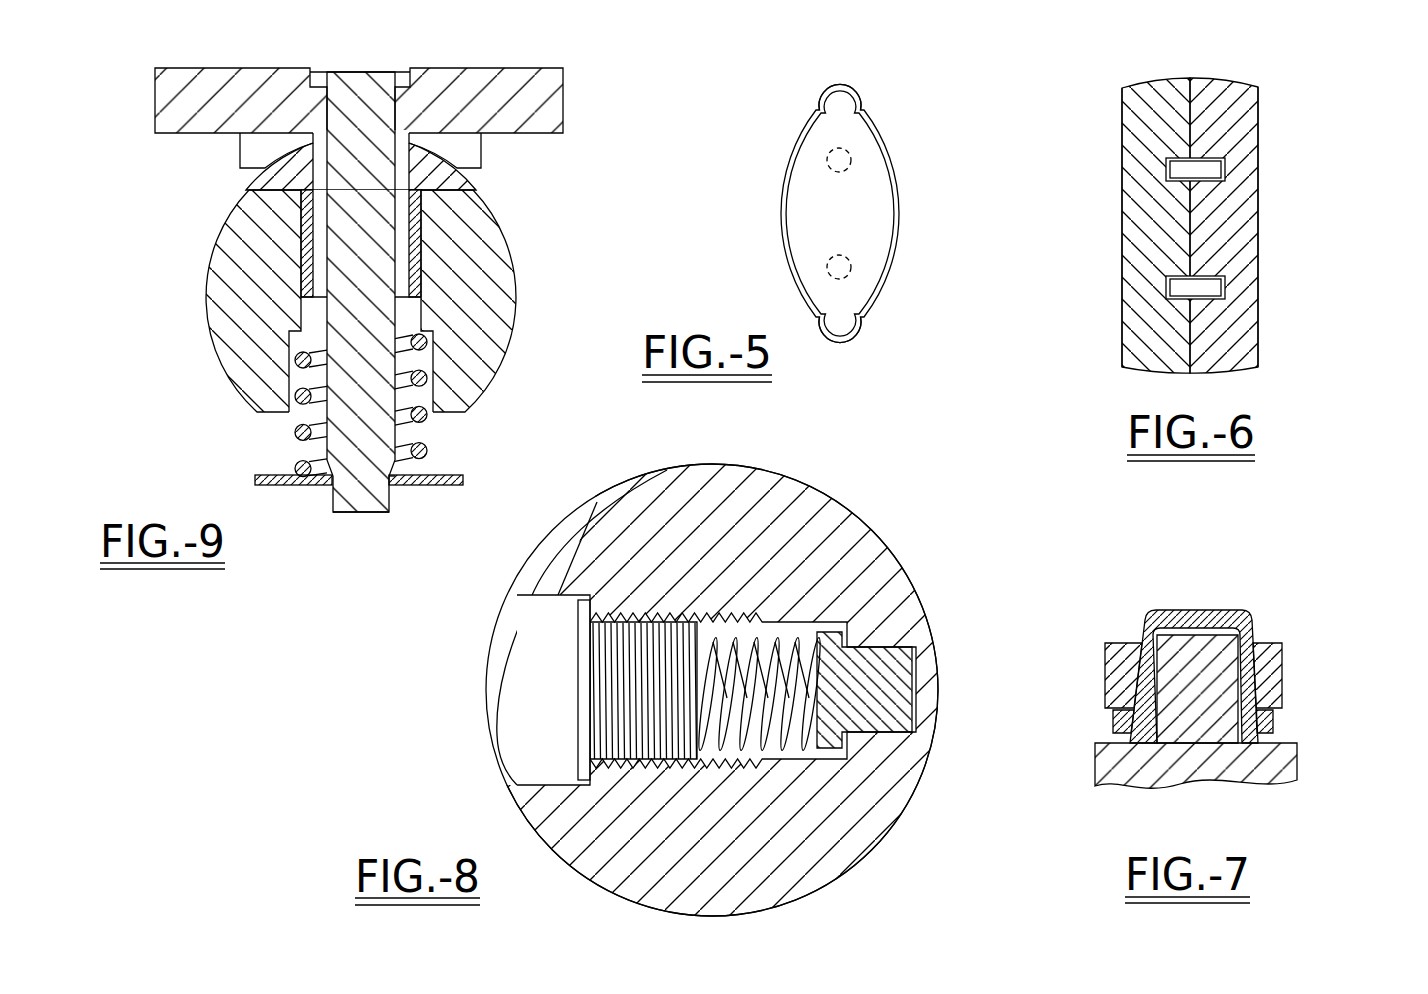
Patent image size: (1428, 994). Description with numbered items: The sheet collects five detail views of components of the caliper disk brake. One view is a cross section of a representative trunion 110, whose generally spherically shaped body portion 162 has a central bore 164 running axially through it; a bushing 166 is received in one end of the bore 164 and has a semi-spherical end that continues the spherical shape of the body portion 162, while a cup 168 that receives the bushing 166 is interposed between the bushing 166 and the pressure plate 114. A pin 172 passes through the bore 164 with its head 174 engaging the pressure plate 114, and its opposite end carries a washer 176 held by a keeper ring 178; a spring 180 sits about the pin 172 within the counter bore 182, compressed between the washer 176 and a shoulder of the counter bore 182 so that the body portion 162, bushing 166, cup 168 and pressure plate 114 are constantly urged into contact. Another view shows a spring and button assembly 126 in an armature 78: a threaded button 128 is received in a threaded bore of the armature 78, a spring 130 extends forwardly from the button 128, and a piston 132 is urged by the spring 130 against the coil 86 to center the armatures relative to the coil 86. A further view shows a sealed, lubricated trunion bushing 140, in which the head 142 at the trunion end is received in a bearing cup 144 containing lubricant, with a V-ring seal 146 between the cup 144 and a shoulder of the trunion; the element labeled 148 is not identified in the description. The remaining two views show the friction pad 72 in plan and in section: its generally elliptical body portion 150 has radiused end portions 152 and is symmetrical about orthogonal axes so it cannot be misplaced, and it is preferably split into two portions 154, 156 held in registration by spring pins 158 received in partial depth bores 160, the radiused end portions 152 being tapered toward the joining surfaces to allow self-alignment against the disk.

In FIG. 9, the trunion 110 is at (342, 281).
In FIG. 9, the pressure plate 114 is at (155, 106).
In FIG. 9, the body portion 162 is at (406, 303).
In FIG. 9, the central bore 164 is at (307, 315).
In FIG. 9, the bushing 166 is at (260, 180).
In FIG. 9, the cup 168 is at (240, 157).
In FIG. 9, the pin 172 is at (372, 514).
In FIG. 9, the head 174 is at (398, 281).
In FIG. 9, the washer 176 is at (450, 472).
In FIG. 9, the keeper ring 178 is at (393, 486).
In FIG. 9, the spring 180 is at (422, 418).
In FIG. 9, the counter bore 182 is at (422, 397).
In FIG. 5, the friction pad 72 is at (881, 202).
In FIG. 6, the friction pad 72 is at (1224, 206).
In FIG. 5, the body portion 150 is at (875, 218).
In FIG. 5, the radiused end portions 152 is at (889, 133).
In FIG. 6, the wear pad portion 154 is at (1225, 78).
In FIG. 6, the wear pad portion 156 is at (1163, 78).
In FIG. 6, the spring pins 158 is at (1173, 170).
In FIG. 6, the partial depth bores 160 is at (1223, 170).
In FIG. 8, the spring and button assembly 126 is at (724, 683).
In FIG. 8, the threaded button 128 is at (598, 632).
In FIG. 8, the spring 130 is at (786, 752).
In FIG. 8, the piston 132 is at (903, 710).
In FIG. 8, the coil 86 is at (925, 688).
In FIG. 8, the armature 78 is at (861, 835).
In FIG. 7, the trunion bushing 140 is at (1241, 654).
In FIG. 7, the head 142 is at (1297, 757).
In FIG. 7, the bearing cup 144 is at (1252, 625).
In FIG. 7, the V-ring seal 146 is at (1275, 722).
In FIG. 7, the collar 148 is at (1282, 658).